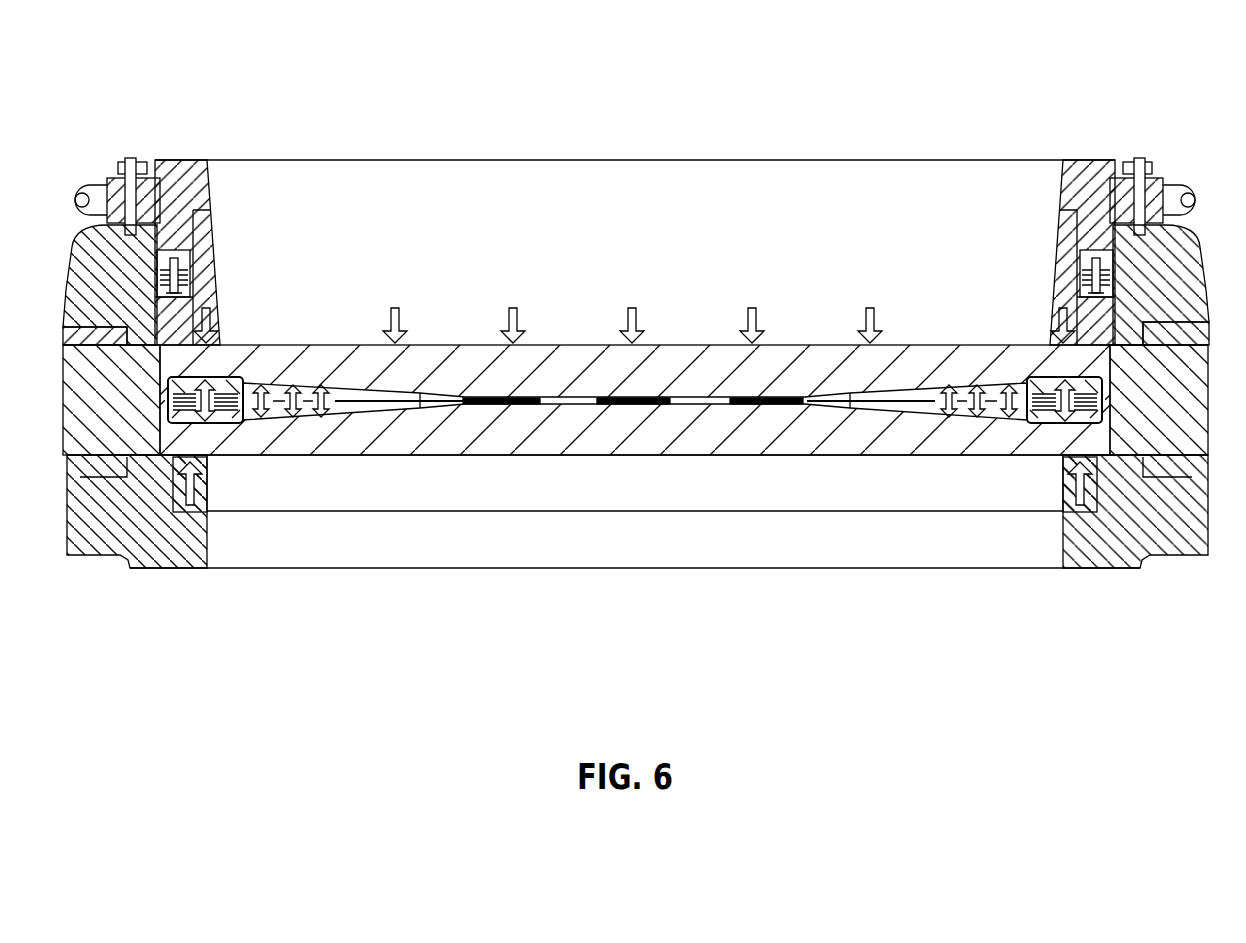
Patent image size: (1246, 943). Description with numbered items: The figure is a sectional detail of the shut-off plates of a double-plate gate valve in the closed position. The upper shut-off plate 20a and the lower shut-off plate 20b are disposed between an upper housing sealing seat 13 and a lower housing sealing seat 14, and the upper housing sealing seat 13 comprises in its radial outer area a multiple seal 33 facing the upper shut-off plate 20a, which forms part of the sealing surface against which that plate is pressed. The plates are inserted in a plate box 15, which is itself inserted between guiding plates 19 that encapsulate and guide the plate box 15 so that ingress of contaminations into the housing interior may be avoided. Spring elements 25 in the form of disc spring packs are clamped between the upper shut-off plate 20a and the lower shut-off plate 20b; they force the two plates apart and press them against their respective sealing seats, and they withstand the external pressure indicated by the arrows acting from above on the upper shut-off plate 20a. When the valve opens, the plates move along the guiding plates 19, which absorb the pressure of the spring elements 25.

The upper housing sealing seat 13 is at (167, 165).
The lower housing sealing seat 14 is at (1081, 503).
The plate box 15 is at (127, 438).
The guiding plates 19 is at (93, 320).
The upper shut-off plate 20a is at (455, 365).
The lower shut-off plate 20b is at (378, 450).
The spring elements 25 is at (1048, 422).
The multiple seal 33 is at (1103, 308).